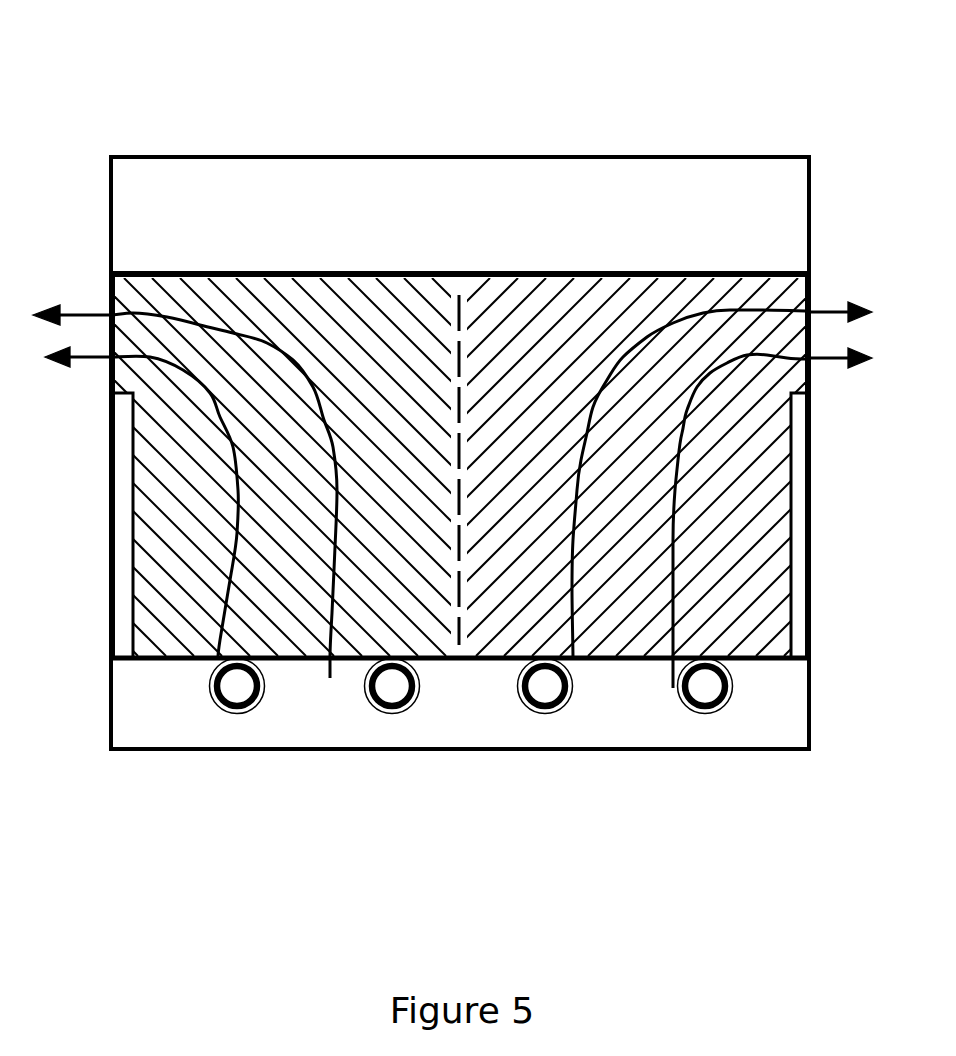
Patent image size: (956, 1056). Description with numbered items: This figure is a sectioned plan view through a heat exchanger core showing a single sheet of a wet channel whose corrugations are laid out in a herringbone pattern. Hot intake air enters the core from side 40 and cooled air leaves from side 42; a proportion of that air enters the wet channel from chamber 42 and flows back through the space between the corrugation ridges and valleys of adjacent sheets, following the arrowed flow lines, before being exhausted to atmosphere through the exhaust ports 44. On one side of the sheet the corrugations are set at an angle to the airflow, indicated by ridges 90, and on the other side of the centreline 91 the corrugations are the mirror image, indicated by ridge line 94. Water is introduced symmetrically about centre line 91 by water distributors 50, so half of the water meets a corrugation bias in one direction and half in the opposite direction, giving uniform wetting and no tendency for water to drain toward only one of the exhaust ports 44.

The side 40 is at (455, 215).
The side 42 is at (620, 712).
The exhaust ports 44 is at (115, 297).
The water distributors 50 is at (258, 698).
The ridges 90 is at (305, 568).
The centreline 91 is at (458, 593).
The ridge line 94 is at (623, 592).